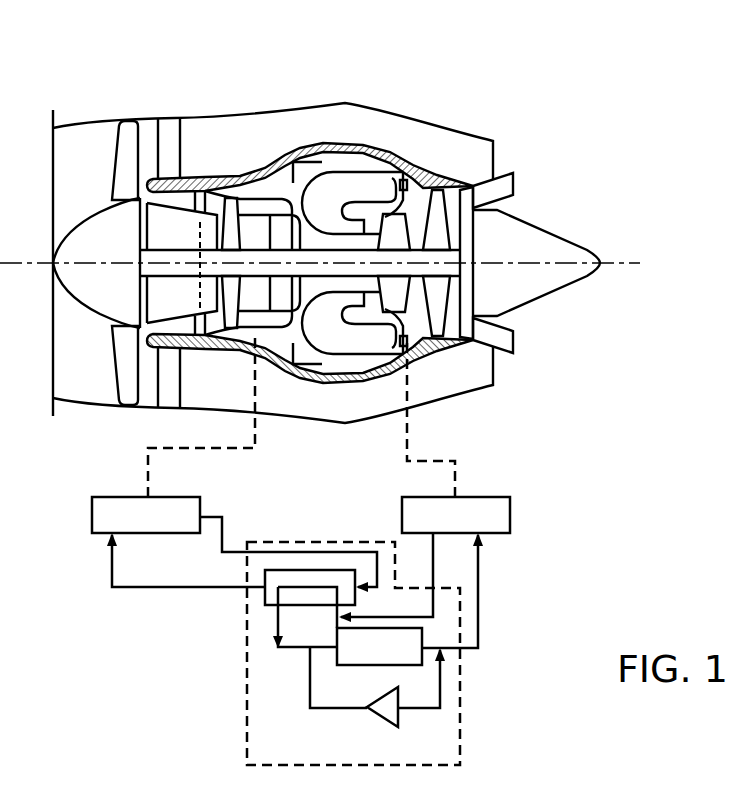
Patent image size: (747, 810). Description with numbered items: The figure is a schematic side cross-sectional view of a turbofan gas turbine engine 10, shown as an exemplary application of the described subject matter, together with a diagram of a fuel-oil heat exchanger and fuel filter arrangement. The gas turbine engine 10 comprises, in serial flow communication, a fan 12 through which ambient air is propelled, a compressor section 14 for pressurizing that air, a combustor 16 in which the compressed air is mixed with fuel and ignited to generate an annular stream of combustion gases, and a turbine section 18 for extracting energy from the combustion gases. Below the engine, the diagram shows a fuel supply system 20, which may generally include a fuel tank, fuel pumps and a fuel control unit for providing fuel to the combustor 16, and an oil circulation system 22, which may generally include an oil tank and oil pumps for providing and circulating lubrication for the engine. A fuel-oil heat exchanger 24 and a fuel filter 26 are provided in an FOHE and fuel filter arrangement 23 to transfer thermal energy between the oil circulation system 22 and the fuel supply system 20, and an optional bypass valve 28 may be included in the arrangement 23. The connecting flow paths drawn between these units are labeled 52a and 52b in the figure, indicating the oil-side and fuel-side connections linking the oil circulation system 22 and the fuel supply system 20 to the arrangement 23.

The gas turbine engine 10 is at (325, 87).
The fan 12 is at (113, 152).
The compressor section 14 is at (268, 208).
The combustor 16 is at (378, 168).
The turbine section 18 is at (421, 297).
The fuel supply system 20 is at (512, 522).
The oil circulation system 22 is at (92, 518).
The FOHE and fuel filter arrangement 23 is at (245, 707).
The fuel-oil heat exchanger 24 is at (263, 605).
The fuel filter 26 is at (398, 667).
The bypass valve 28 is at (373, 715).
The oil flow path 52a is at (172, 585).
The fuel flow path 52b is at (278, 613).